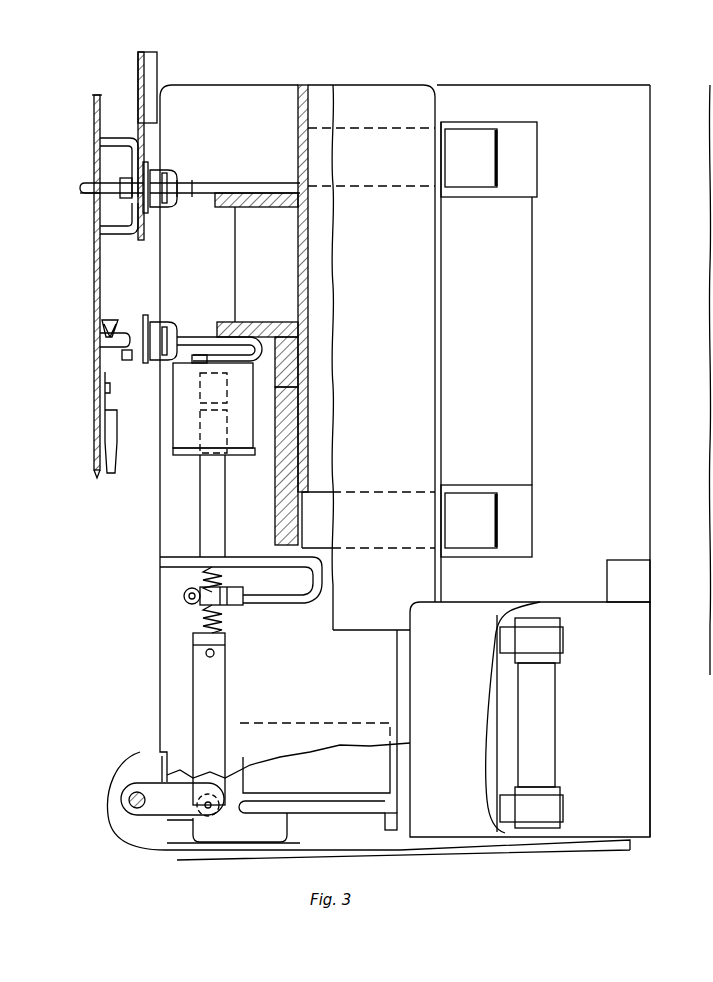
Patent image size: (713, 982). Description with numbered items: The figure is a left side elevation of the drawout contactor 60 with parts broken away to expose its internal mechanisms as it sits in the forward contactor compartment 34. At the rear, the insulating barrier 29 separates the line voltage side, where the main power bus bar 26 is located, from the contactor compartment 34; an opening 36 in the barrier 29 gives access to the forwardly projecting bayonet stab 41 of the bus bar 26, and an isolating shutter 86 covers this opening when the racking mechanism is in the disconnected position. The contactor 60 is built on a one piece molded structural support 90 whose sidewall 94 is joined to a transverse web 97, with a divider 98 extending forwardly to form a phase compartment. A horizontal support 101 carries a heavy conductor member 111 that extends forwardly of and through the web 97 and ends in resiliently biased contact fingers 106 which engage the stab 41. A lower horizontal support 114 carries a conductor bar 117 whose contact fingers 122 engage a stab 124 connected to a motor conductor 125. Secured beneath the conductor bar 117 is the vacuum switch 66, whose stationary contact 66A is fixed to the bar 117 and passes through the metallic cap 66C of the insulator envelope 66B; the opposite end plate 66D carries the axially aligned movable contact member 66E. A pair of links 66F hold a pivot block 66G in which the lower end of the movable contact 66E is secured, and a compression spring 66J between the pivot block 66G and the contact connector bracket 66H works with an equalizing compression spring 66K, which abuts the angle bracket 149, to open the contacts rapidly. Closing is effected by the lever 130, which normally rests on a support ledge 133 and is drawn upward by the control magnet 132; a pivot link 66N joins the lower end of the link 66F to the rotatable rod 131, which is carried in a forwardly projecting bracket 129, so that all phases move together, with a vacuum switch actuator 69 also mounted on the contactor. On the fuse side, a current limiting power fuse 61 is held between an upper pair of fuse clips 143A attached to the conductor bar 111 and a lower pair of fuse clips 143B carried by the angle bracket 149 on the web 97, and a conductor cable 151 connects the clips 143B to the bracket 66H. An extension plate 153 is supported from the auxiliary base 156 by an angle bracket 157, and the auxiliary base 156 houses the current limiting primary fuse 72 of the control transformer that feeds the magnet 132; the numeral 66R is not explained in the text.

The main power bus bar 26 is at (88, 182).
The insulating barrier 29 is at (93, 285).
The contactor compartment 34 is at (94, 300).
The opening 36 is at (86, 195).
The bayonet stab 41 is at (124, 199).
The drawout contactor 60 is at (210, 865).
The current limiting power fuse 61 is at (486, 362).
The vacuum switch 66 is at (185, 452).
The stationary contact 66A is at (200, 380).
The insulator envelope 66B is at (285, 404).
The metallic cap 66C is at (290, 369).
The end plate 66D is at (245, 456).
The movable contact member 66E is at (226, 508).
The link 66F is at (226, 699).
The pivot block 66G is at (218, 660).
The contact connector bracket 66H is at (183, 600).
The compression spring 66J is at (230, 622).
The equalizing compression spring 66K is at (225, 579).
The pivot link 66N is at (142, 822).
The pivot 66R is at (215, 800).
The vacuum switch actuator 69 is at (253, 849).
The current limiting primary fuse 72 is at (555, 711).
The isolating shutter 86 is at (138, 70).
The structural support 90 is at (402, 88).
The sidewall 94 is at (445, 168).
The transverse web 97 is at (305, 85).
The divider 98 is at (243, 90).
The horizontal support 101 is at (248, 208).
The contact fingers 106 is at (118, 180).
The conductor member 111 is at (248, 185).
The horizontal support 114 is at (250, 326).
The conductor bar 117 is at (202, 337).
The contact fingers 122 is at (127, 361).
The stab 124 is at (120, 325).
The conductor 125 is at (110, 476).
The bracket 129 is at (128, 765).
The lever 130 is at (302, 818).
The rotatable rod 131 is at (129, 801).
The control magnet 132 is at (288, 758).
The support ledge 133 is at (387, 818).
The fuse clips 143A is at (332, 128).
The fuse clips 143B is at (330, 492).
The angle bracket 149 is at (248, 557).
The conductor cable 151 is at (324, 585).
The extension plate 153 is at (650, 348).
The auxiliary base 156 is at (640, 805).
The angle bracket 157 is at (620, 562).